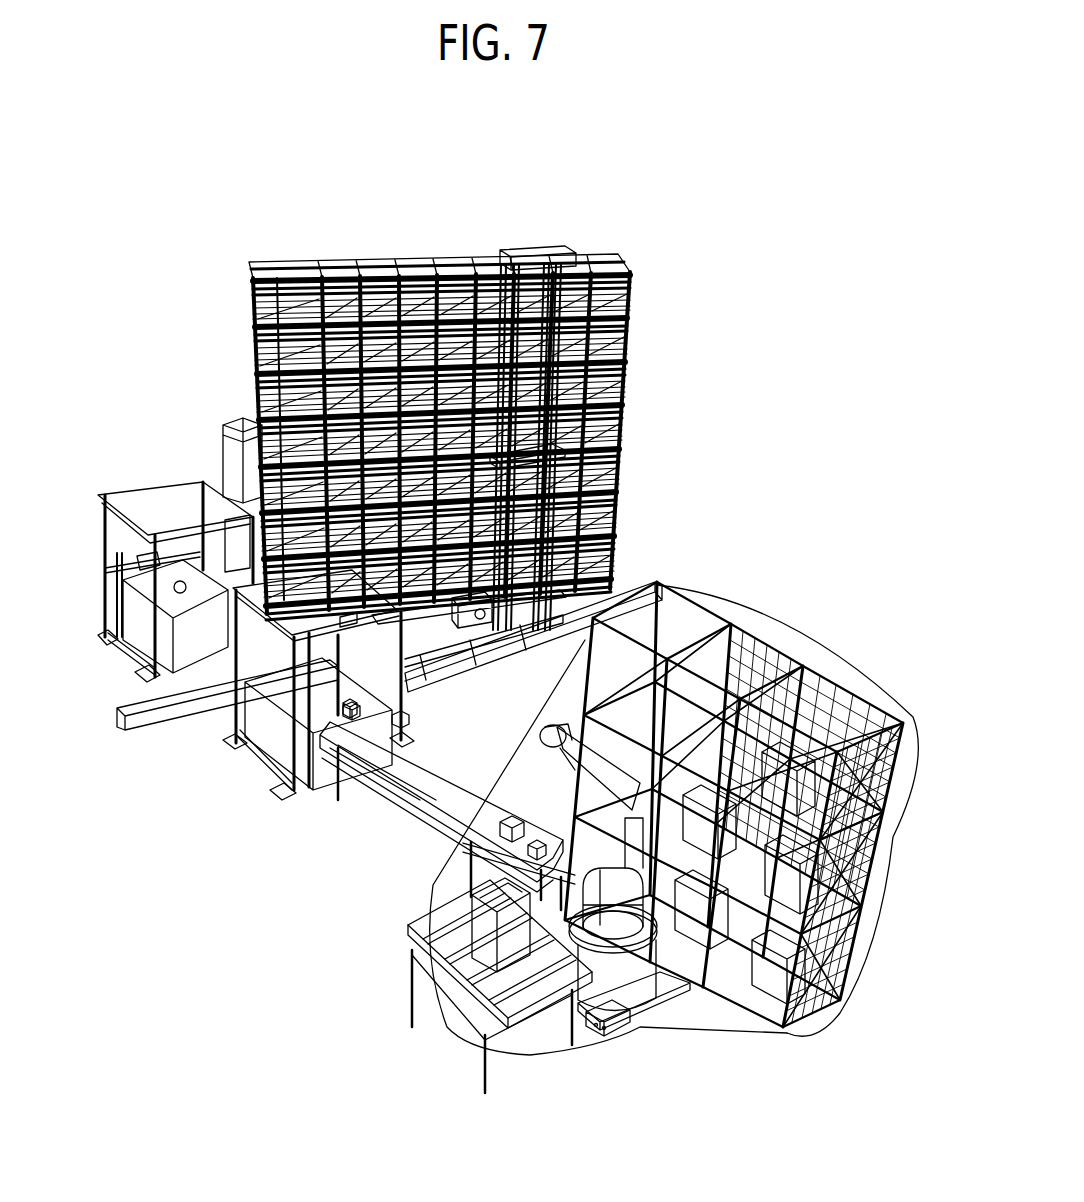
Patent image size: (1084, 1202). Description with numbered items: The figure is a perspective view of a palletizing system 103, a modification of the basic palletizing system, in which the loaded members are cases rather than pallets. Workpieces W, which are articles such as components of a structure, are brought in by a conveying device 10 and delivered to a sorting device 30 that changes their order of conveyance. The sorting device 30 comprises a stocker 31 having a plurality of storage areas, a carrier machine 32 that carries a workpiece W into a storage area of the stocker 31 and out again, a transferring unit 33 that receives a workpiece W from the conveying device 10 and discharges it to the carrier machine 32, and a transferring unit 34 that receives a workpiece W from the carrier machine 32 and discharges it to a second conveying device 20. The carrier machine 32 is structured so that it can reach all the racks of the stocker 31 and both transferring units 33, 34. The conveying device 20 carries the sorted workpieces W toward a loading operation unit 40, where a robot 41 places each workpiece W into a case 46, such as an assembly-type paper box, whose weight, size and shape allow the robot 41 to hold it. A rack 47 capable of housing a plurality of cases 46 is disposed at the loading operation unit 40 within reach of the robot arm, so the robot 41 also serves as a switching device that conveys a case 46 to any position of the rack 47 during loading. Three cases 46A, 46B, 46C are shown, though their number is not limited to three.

The palletizing system 103 is at (456, 159).
The conveying device 10 is at (133, 567).
The conveying device 20 is at (397, 748).
The sorting device 30 is at (645, 401).
The stocker 31 is at (598, 253).
The carrier machine 32 is at (520, 246).
The transferring unit 33 is at (138, 618).
The transferring unit 34 is at (288, 727).
The loading operation unit 40 is at (543, 1053).
The robot 41 is at (617, 983).
The case 46 is at (746, 867).
The case 46A is at (483, 940).
The case 46B is at (770, 963).
The case 46C is at (793, 773).
The rack 47 is at (688, 628).
The workpiece W is at (405, 709).